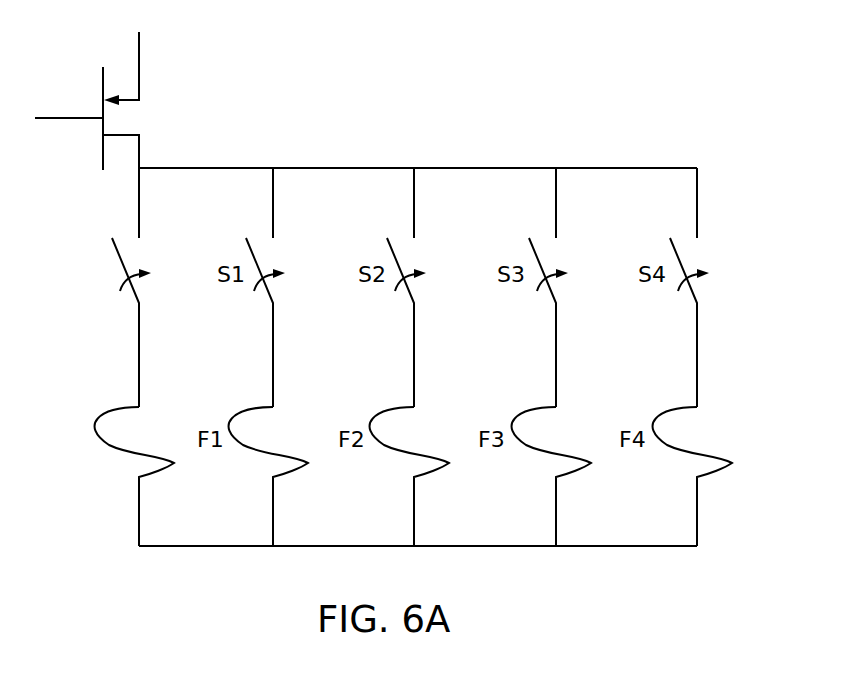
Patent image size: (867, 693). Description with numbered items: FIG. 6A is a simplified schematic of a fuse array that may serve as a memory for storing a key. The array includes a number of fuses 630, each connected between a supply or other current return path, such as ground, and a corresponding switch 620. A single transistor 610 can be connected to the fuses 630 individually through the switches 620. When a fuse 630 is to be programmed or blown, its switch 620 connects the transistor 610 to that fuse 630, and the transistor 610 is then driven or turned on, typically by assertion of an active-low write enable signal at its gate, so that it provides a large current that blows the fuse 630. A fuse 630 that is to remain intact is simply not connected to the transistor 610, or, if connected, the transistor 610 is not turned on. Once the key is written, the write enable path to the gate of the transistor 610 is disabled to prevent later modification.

The transistor 610 is at (118, 101).
The switch 620 is at (104, 287).
The fuse 630 is at (113, 476).